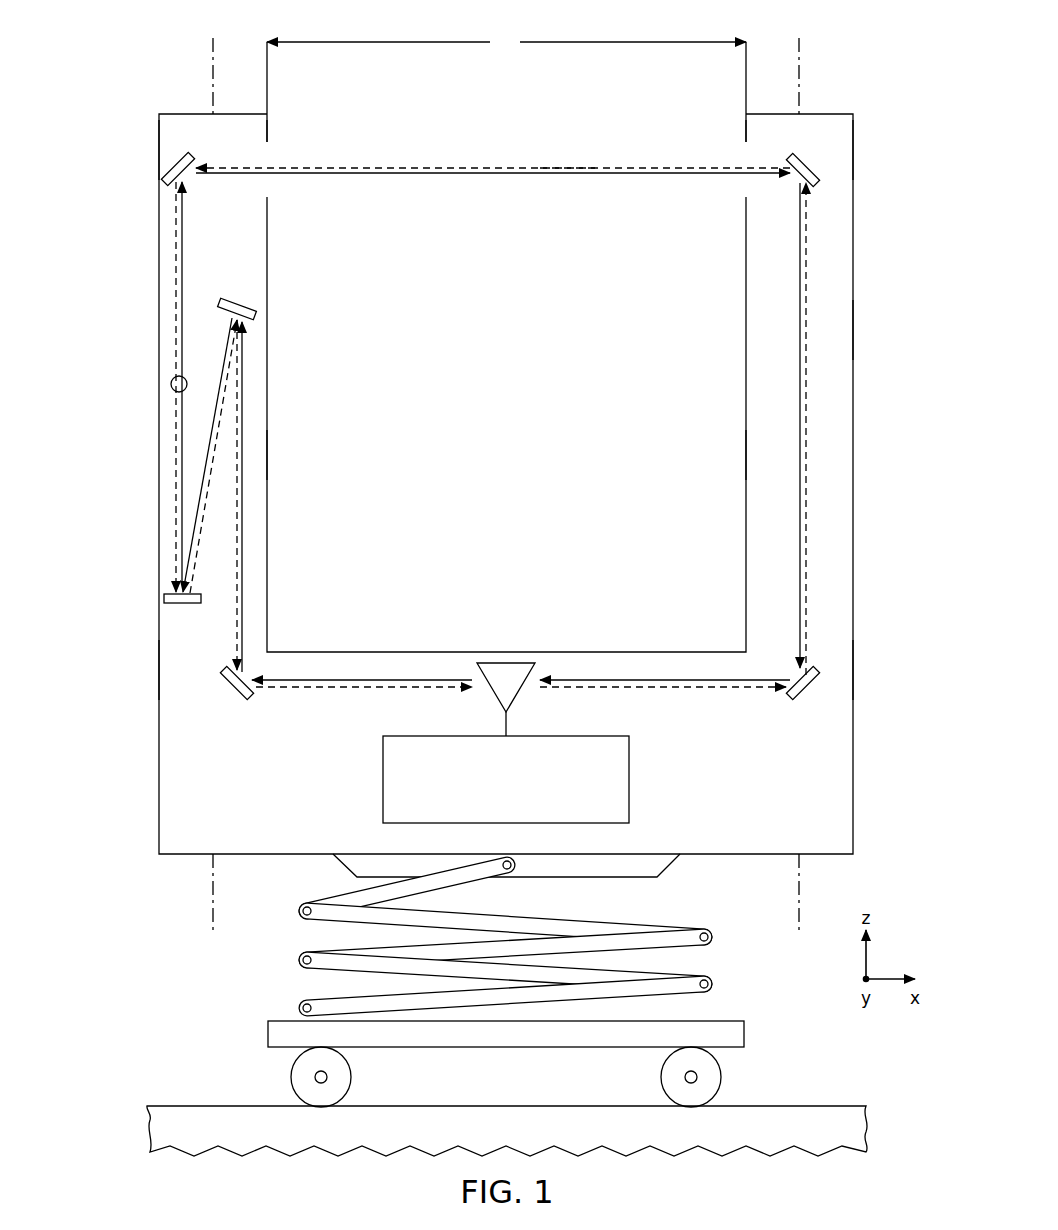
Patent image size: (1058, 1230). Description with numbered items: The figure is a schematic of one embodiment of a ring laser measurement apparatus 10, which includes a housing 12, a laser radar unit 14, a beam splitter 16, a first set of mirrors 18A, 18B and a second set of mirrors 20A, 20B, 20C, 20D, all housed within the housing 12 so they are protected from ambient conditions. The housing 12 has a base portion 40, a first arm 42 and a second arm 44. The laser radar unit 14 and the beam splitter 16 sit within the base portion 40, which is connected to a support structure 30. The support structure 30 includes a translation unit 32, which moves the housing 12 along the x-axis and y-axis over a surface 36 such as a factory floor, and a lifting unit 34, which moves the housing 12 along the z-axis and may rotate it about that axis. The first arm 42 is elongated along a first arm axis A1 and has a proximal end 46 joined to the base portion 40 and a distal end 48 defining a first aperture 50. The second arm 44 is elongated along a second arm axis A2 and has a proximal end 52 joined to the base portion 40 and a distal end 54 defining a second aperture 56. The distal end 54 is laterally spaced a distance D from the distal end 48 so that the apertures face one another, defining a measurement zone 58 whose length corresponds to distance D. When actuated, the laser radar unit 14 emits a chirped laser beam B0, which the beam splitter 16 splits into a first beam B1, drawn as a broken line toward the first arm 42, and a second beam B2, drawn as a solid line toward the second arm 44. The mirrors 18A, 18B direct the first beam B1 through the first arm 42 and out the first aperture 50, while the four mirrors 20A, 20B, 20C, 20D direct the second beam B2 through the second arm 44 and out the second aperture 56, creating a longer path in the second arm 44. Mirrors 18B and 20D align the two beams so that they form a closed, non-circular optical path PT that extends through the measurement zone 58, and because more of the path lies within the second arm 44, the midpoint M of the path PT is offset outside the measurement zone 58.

The ring laser measurement apparatus 10 is at (862, 94).
The housing 12 is at (853, 842).
The laser radar unit 14 is at (629, 783).
The beam splitter 16 is at (505, 663).
The mirror of first set 18A is at (808, 694).
The mirror of first set 18B is at (808, 162).
The mirror of second set 20A is at (232, 694).
The mirror of second set 20B is at (236, 300).
The mirror of second set 20C is at (182, 604).
The mirror of second set 20D is at (182, 160).
The support structure 30 is at (267, 854).
The translation unit 32 is at (744, 1033).
The lifting unit 34 is at (714, 937).
The surface 36 is at (843, 1106).
The base portion 40 is at (620, 652).
The first arm 42 is at (745, 455).
The second arm 44 is at (268, 455).
The proximal end 46 is at (868, 672).
The distal end 48 is at (868, 161).
The first aperture 50 is at (744, 153).
The proximal end 52 is at (136, 672).
The distal end 54 is at (136, 153).
The second aperture 56 is at (280, 153).
The measurement zone 58 is at (574, 153).
The first arm axis A1 is at (800, 62).
The second arm axis A2 is at (212, 62).
The laser beam B0 is at (507, 728).
The first beam B1 is at (735, 688).
The second beam B2 is at (330, 688).
The distance D is at (506, 43).
The midpoint M is at (171, 384).
The closed optical path PT is at (824, 334).